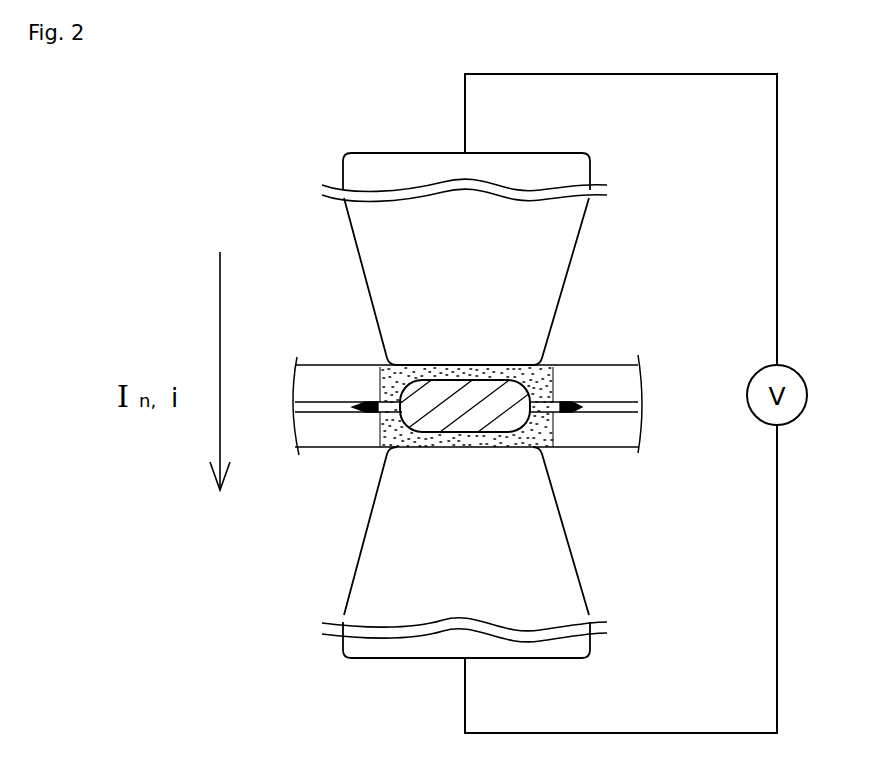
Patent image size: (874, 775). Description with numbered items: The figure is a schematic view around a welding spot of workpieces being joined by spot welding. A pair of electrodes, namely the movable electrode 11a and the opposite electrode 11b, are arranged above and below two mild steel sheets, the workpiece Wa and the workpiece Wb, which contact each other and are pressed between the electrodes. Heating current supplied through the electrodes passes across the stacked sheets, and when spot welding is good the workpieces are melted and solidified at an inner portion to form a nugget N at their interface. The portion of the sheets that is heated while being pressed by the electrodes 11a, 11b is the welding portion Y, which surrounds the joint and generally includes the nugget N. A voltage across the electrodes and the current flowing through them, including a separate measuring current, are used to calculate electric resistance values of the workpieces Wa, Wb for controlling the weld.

The movable electrode 11a is at (540, 290).
The opposite electrode 11b is at (543, 532).
The workpiece Wa is at (620, 383).
The workpiece Wb is at (622, 432).
The welding portion Y is at (392, 425).
The nugget N is at (453, 415).